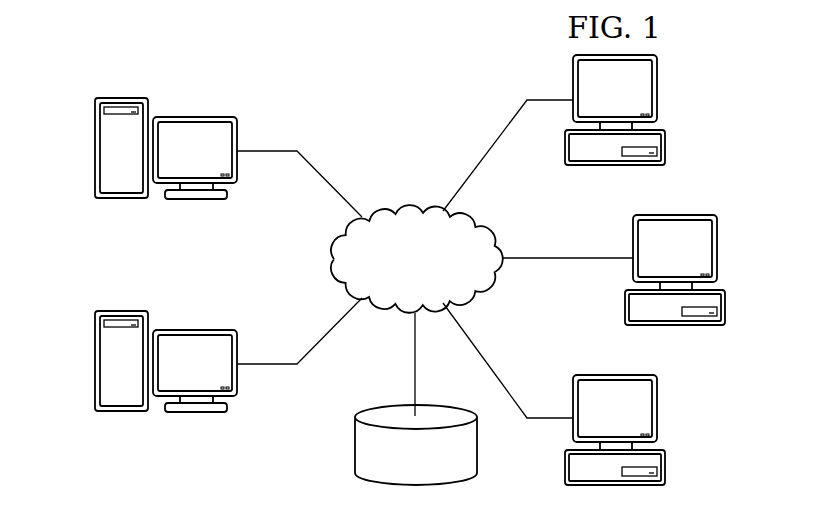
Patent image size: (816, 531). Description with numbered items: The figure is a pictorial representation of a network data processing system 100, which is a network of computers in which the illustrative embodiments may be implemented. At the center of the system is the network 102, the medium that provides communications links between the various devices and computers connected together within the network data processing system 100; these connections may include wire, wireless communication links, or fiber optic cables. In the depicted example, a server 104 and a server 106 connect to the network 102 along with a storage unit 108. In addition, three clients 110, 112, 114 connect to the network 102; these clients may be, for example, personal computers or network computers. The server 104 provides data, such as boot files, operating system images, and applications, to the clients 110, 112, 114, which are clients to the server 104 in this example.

The network data processing system 100 is at (297, 66).
The network 102 is at (410, 206).
The server 104 is at (94, 148).
The server 106 is at (94, 360).
The storage unit 108 is at (355, 447).
The client 110 is at (666, 148).
The client 112 is at (726, 307).
The client 114 is at (666, 467).